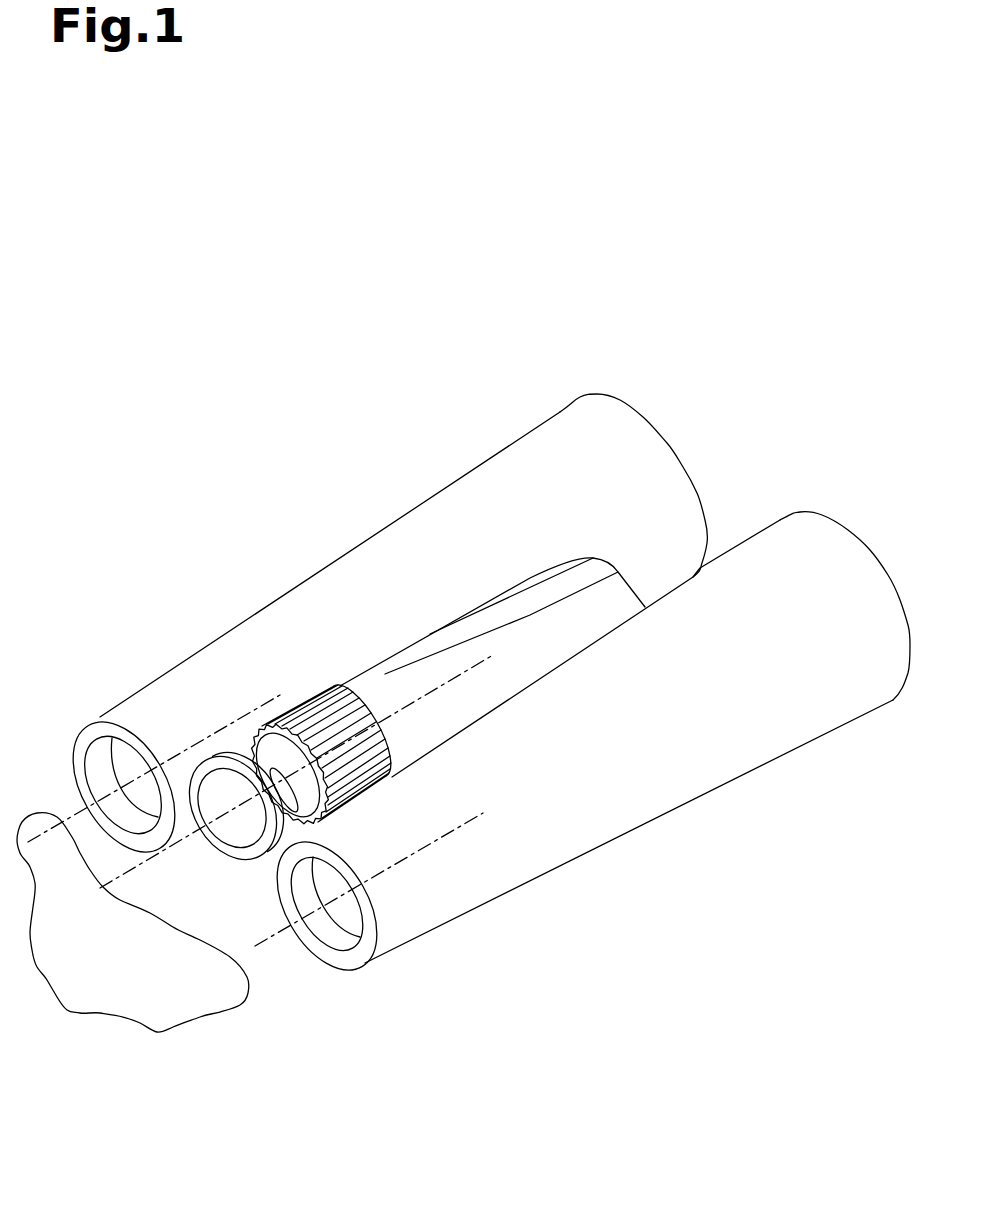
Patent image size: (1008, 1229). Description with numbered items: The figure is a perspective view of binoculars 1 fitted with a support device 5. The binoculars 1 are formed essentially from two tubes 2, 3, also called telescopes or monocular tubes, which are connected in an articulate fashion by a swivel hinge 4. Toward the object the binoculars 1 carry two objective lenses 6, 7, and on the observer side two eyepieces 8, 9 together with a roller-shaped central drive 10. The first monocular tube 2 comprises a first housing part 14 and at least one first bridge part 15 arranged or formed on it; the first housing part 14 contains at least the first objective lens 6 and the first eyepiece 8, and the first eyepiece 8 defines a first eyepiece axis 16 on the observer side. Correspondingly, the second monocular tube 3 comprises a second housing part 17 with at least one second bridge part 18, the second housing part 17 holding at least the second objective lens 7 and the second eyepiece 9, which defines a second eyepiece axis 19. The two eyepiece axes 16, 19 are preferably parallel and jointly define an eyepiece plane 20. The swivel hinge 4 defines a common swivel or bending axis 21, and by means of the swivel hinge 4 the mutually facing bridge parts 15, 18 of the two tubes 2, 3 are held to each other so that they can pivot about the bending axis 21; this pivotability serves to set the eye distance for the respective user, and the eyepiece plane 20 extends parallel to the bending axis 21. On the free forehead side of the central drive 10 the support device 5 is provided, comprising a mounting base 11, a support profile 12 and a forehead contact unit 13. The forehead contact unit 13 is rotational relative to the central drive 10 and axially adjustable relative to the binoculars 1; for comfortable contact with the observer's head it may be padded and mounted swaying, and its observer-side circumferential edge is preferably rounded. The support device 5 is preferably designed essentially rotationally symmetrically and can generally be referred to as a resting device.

The binoculars 1 is at (775, 203).
The first monocular tube 2 is at (816, 845).
The second monocular tube 3 is at (505, 623).
The swivel hinge 4 is at (475, 640).
The support device 5 is at (188, 878).
The first objective lens 6 is at (878, 514).
The second objective lens 7 is at (712, 412).
The first eyepiece 8 is at (326, 953).
The second eyepiece 9 is at (78, 855).
The central drive 10 is at (320, 695).
The mounting base 11 is at (306, 828).
The support profile 12 is at (250, 755).
The forehead contact unit 13 is at (112, 748).
The first housing part 14 is at (660, 762).
The first bridge part 15 is at (475, 702).
The first eyepiece axis 16 is at (418, 855).
The second housing part 17 is at (537, 467).
The second bridge part 18 is at (520, 593).
The second eyepiece axis 19 is at (40, 832).
The eyepiece plane 20 is at (132, 973).
The bending axis 21 is at (118, 880).